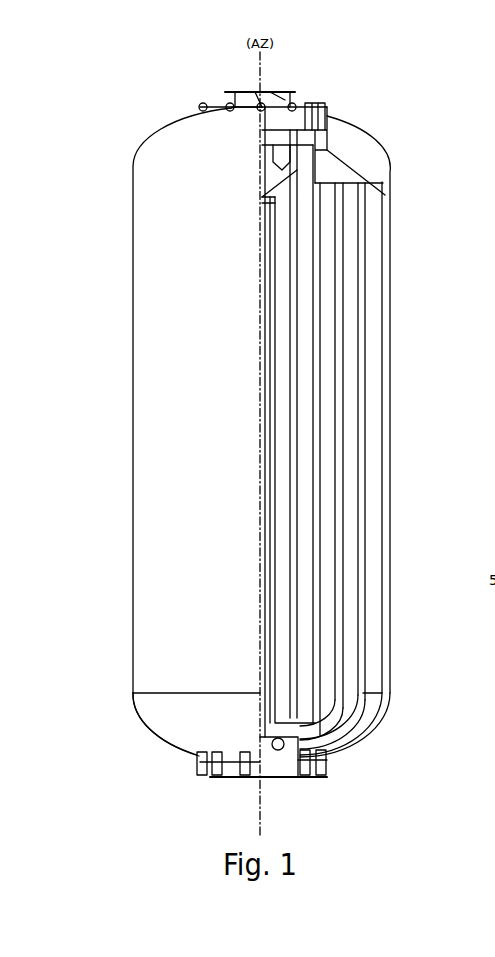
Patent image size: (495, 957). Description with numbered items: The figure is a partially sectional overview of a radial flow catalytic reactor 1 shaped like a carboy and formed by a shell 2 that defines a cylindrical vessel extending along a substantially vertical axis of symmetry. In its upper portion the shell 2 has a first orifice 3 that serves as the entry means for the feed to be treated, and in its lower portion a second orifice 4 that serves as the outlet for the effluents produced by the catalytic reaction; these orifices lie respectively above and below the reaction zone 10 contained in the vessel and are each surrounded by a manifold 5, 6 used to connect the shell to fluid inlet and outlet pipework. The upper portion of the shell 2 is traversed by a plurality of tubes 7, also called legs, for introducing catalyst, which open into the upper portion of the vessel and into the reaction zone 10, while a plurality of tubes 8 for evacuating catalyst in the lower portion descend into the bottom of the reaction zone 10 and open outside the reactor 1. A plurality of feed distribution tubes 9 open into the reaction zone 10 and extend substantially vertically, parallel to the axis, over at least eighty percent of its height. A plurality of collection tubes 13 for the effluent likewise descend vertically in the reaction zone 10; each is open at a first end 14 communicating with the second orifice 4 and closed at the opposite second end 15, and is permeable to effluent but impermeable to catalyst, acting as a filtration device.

The radial flow catalytic reactor 1 is at (230, 432).
The shell 2 is at (145, 173).
The first orifice 3 is at (248, 103).
The second orifice 4 is at (282, 764).
The manifold 5 is at (278, 97).
The manifold 6 is at (235, 768).
The tubes for introducing catalyst 7 is at (200, 107).
The tubes for evacuating catalyst 8 is at (197, 762).
The feed distribution tubes 9 is at (377, 308).
The reaction zone 10 is at (372, 522).
The collection tubes 13 is at (353, 420).
The first end 14 is at (380, 182).
The second end 15 is at (350, 180).